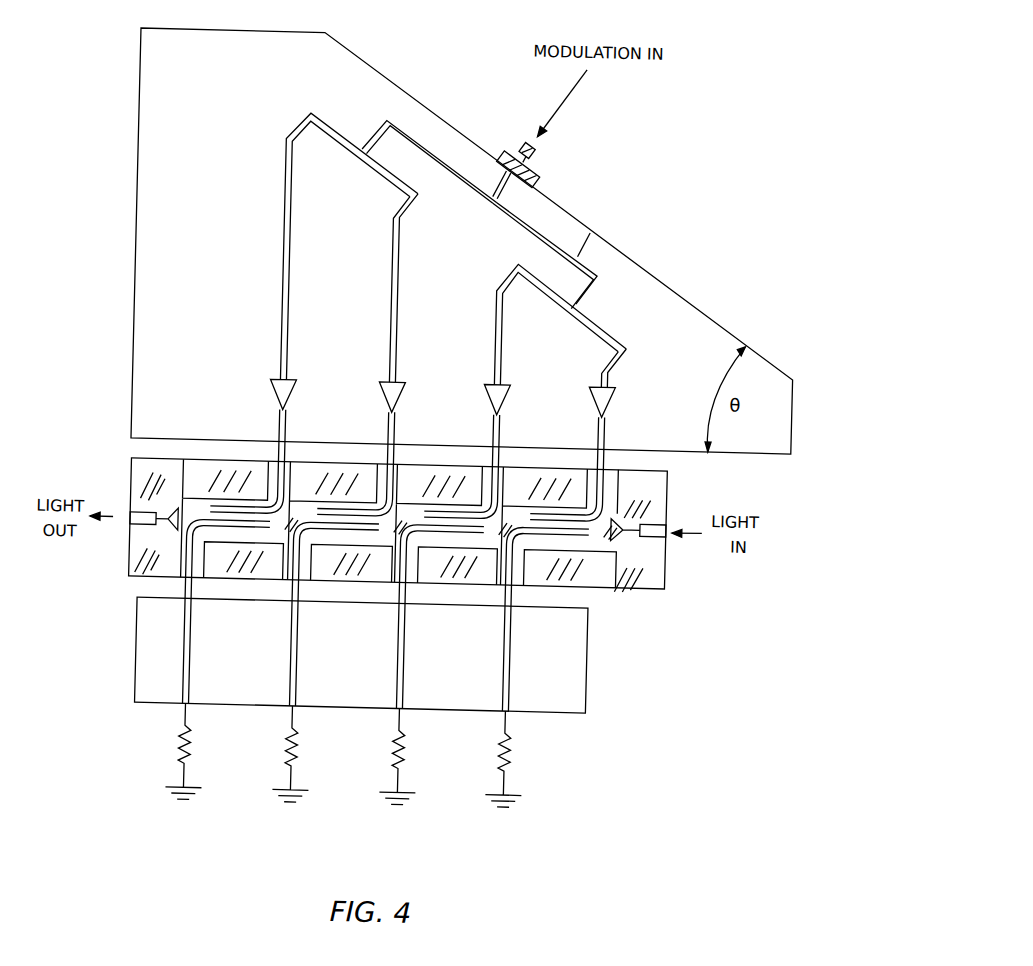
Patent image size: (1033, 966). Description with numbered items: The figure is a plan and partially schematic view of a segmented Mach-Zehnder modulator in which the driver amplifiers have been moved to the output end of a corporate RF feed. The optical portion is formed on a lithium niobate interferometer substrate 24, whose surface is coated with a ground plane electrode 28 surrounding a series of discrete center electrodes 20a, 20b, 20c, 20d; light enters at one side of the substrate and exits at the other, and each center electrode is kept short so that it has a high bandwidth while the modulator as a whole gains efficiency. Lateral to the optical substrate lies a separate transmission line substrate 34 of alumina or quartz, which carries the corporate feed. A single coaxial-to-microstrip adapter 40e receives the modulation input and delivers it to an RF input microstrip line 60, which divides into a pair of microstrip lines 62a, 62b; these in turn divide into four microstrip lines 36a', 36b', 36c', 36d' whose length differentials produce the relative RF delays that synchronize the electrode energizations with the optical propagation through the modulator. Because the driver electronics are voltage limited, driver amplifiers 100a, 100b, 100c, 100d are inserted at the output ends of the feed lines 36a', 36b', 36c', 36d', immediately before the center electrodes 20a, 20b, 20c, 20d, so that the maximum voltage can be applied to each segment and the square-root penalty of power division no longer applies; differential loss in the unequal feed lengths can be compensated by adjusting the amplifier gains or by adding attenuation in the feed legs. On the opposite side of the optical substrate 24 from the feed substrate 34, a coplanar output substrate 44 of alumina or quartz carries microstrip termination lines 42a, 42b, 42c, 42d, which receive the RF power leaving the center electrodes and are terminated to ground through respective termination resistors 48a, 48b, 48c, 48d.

The transmission line substrate 34 is at (141, 257).
The microstrip line 36d' is at (301, 246).
The microstrip line 36c' is at (368, 287).
The microstrip line 36b' is at (527, 319).
The microstrip line 36a' is at (651, 368).
The microstrip line 62b is at (445, 151).
The microstrip line 62a is at (595, 223).
The RF input microstrip line 60 is at (506, 183).
The coaxial-to-microstrip adapter 40e is at (540, 158).
The driver amplifier 100d is at (281, 378).
The driver amplifier 100c is at (391, 377).
The driver amplifier 100b is at (496, 375).
The driver amplifier 100a is at (603, 390).
The center electrode 20d is at (237, 503).
The center electrode 20c is at (349, 503).
The center electrode 20b is at (459, 500).
The center electrode 20a is at (560, 498).
The ground plane electrode 28 is at (143, 490).
The interferometer substrate 24 is at (130, 561).
The output substrate 44 is at (152, 655).
The microstrip termination line 42d is at (202, 661).
The microstrip termination line 42c is at (309, 664).
The microstrip termination line 42b is at (419, 662).
The microstrip termination line 42a is at (526, 664).
The termination resistor 48d is at (198, 749).
The termination resistor 48c is at (301, 749).
The termination resistor 48b is at (408, 746).
The termination resistor 48a is at (525, 756).